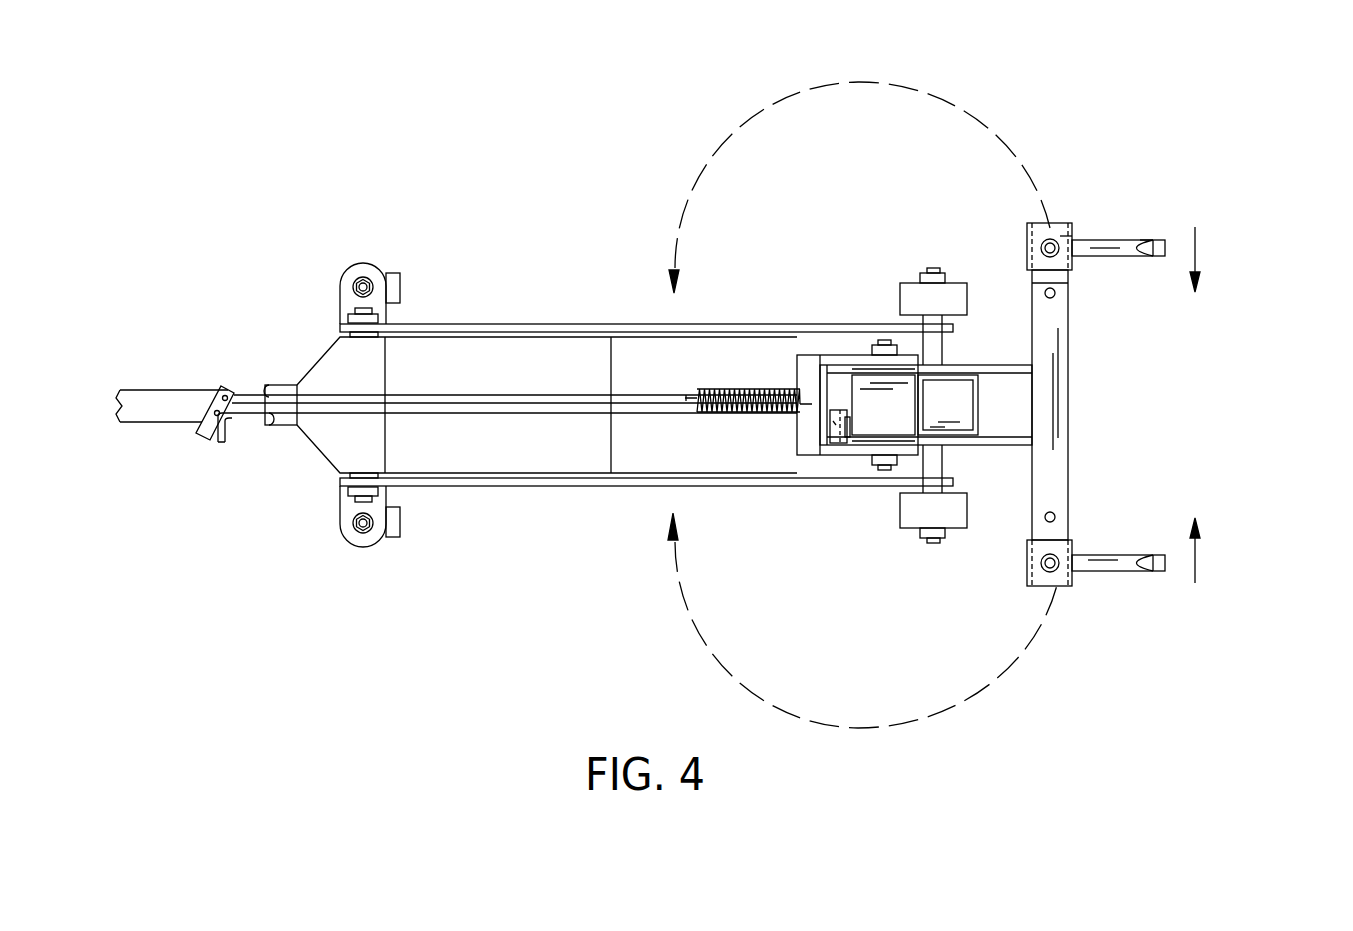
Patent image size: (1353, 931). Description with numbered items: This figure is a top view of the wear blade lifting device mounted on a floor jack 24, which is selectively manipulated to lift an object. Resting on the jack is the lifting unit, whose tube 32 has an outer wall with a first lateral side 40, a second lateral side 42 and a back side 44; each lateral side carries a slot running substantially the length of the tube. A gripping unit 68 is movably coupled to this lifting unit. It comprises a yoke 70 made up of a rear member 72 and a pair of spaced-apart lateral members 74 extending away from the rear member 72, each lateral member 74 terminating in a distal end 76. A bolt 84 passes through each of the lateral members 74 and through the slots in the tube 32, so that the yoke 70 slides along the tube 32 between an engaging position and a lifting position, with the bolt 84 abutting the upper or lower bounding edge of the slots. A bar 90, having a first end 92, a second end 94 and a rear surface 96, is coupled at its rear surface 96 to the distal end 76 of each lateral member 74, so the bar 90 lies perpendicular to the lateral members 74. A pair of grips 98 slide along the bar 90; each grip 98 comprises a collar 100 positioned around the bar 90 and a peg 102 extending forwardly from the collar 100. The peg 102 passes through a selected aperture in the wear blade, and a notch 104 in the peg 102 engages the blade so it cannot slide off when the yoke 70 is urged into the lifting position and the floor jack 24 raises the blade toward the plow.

The floor jack 24 is at (528, 290).
The tube 32 is at (980, 437).
The first lateral side 40 is at (948, 437).
The second lateral side 42 is at (957, 375).
The back side 44 is at (867, 423).
The gripping unit 68 is at (1124, 380).
The yoke 70 is at (910, 365).
The rear member 72 is at (820, 435).
The lateral members 74 is at (935, 365).
The distal end 76 is at (1032, 367).
The bolt 84 is at (880, 350).
The bar 90 is at (1068, 328).
The first end 92 is at (1040, 223).
The second end 94 is at (1058, 586).
The rear surface 96 is at (1032, 283).
The grips 98 is at (1125, 228).
The collar 100 is at (1065, 236).
The peg 102 is at (1147, 238).
The notch 104 is at (1160, 267).